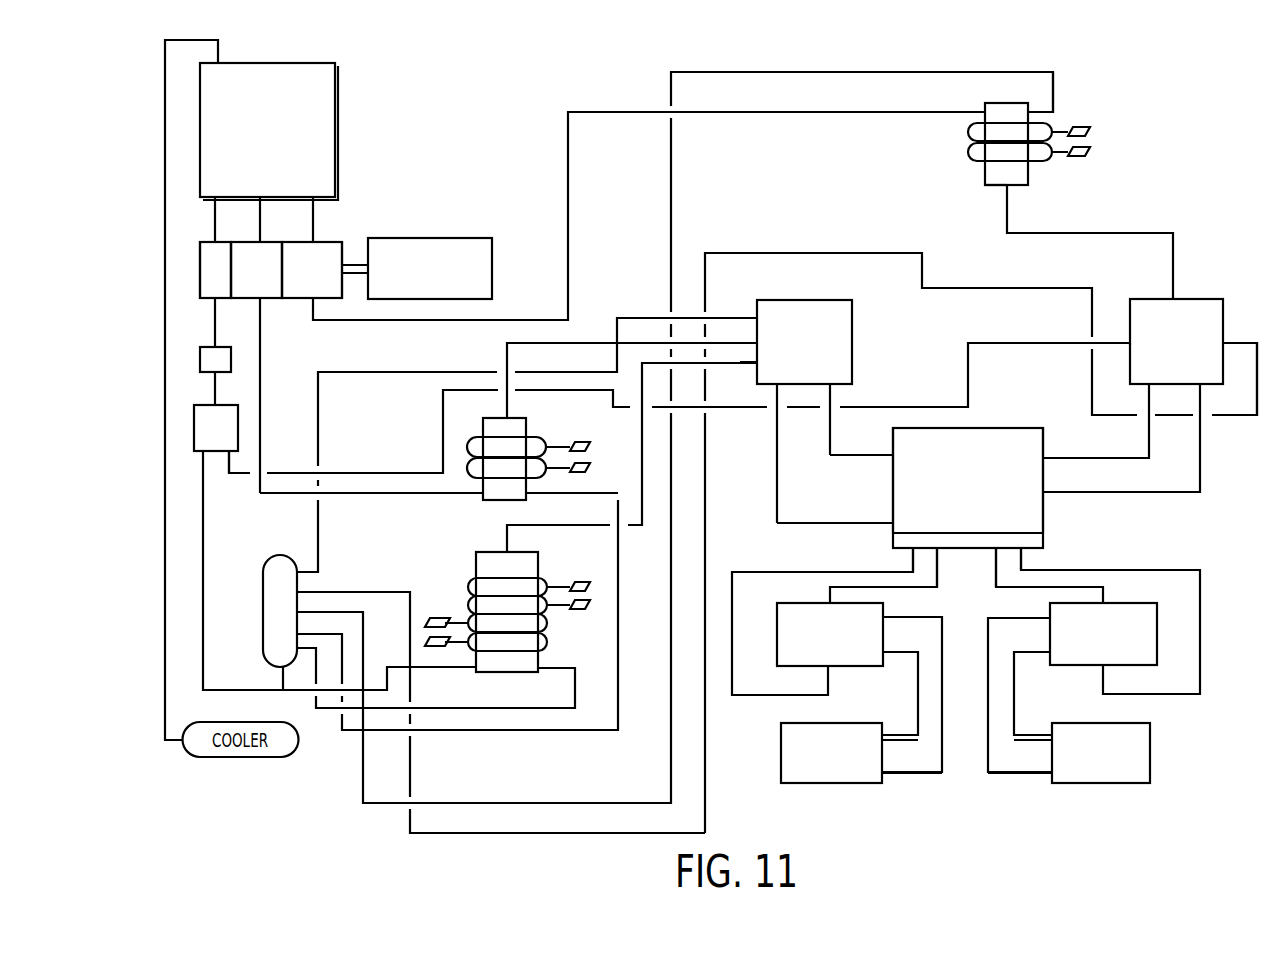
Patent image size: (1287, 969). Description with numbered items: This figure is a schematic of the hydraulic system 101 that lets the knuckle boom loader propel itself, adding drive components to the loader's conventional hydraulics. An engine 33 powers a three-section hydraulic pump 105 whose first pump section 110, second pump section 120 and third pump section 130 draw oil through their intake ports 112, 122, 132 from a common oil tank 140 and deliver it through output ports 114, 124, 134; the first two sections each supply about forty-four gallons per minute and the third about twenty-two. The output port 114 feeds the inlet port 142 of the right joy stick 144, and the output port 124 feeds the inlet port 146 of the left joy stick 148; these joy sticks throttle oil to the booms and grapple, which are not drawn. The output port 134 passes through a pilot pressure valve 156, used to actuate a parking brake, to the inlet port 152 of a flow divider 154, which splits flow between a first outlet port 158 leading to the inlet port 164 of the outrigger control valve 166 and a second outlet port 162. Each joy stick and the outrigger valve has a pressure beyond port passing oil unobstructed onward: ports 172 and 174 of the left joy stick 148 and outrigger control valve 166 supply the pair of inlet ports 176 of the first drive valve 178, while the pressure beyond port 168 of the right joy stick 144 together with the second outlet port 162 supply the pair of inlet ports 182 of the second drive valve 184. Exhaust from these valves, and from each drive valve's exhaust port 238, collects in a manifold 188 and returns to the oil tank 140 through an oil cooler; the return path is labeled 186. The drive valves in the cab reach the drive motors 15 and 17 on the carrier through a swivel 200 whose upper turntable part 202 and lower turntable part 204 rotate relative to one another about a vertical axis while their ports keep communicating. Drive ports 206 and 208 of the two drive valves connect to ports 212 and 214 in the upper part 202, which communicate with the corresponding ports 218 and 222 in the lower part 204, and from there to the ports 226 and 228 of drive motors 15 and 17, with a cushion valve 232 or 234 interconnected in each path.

The hydraulic system 101 is at (1190, 131).
The oil tank 140 is at (338, 149).
The third pump section 130 is at (226, 280).
The second pump section 120 is at (266, 280).
The first pump section 110 is at (321, 280).
The three-section hydraulic pump 105 is at (330, 241).
The engine 33 is at (407, 237).
The intake port 132 is at (213, 238).
The intake port 122 is at (258, 240).
The intake port 112 is at (313, 239).
The output port 134 is at (213, 299).
The output port 124 is at (257, 299).
The output port 114 is at (310, 300).
The pilot pressure valve 156 is at (200, 358).
The inlet port 152 is at (218, 402).
The flow divider 154 is at (229, 440).
The first outlet port 158 is at (203, 453).
The second outlet port 162 is at (228, 455).
The manifold 188 is at (278, 617).
The left joy stick 148 is at (525, 418).
The pressure beyond port 172 is at (506, 417).
The inlet port 146 is at (483, 495).
The return line 186 is at (528, 496).
The pressure beyond port 174 is at (510, 551).
The outrigger control valve 166 is at (477, 553).
The inlet port 164 is at (475, 672).
The inlet ports 176 is at (755, 346).
The exhaust port 238 is at (757, 318).
The first drive valve 178 is at (852, 338).
The drive ports 206 is at (828, 395).
The ports 212 is at (892, 522).
The upper turntable part 202 is at (1000, 428).
The swivel 200 is at (982, 527).
The lower turntable part 204 is at (1043, 538).
The ports 214 is at (1043, 491).
The drive ports 208 is at (1199, 386).
The ports 218 is at (936, 555).
The ports 222 is at (1020, 556).
The cushion valve 232 is at (777, 635).
The cushion valve 234 is at (1157, 624).
The drive motor 15 is at (793, 785).
The ports 226 is at (882, 776).
The drive motor 17 is at (1150, 785).
The ports 228 is at (1052, 776).
The inlet port 142 is at (985, 112).
The right joy stick 144 is at (985, 185).
The pressure beyond port 168 is at (1010, 188).
The inlet ports 182 is at (1173, 297).
The second drive valve 184 is at (1223, 301).